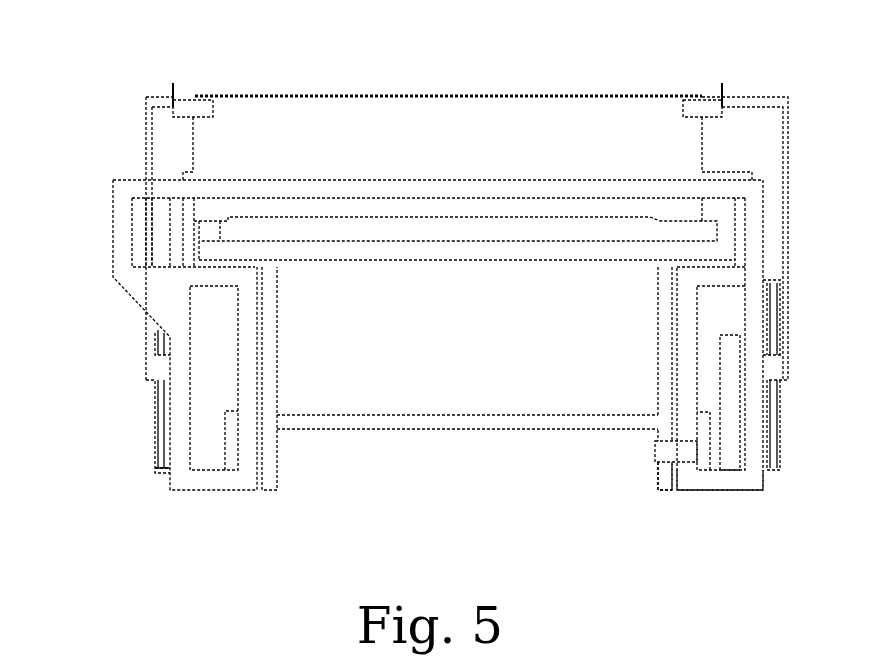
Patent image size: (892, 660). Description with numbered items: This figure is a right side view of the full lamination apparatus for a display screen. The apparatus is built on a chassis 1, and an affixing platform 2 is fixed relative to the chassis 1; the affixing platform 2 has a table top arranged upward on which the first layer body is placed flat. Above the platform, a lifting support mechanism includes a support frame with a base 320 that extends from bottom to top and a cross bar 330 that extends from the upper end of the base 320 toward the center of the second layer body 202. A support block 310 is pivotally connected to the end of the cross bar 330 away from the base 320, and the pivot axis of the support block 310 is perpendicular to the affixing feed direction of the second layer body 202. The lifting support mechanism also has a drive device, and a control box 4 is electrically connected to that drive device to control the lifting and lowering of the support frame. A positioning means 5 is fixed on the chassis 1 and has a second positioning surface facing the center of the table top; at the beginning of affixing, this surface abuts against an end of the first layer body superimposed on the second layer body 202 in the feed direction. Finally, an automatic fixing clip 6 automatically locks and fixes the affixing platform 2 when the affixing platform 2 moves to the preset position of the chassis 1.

The chassis 1 is at (705, 477).
The affixing platform 2 is at (667, 477).
The control box 4 is at (732, 460).
The positioning means 5 is at (258, 234).
The automatic fixing clip 6 is at (676, 451).
The second layer body 202 is at (420, 95).
The support block 310 is at (212, 108).
The base 320 is at (147, 130).
The cross bar 330 is at (152, 97).